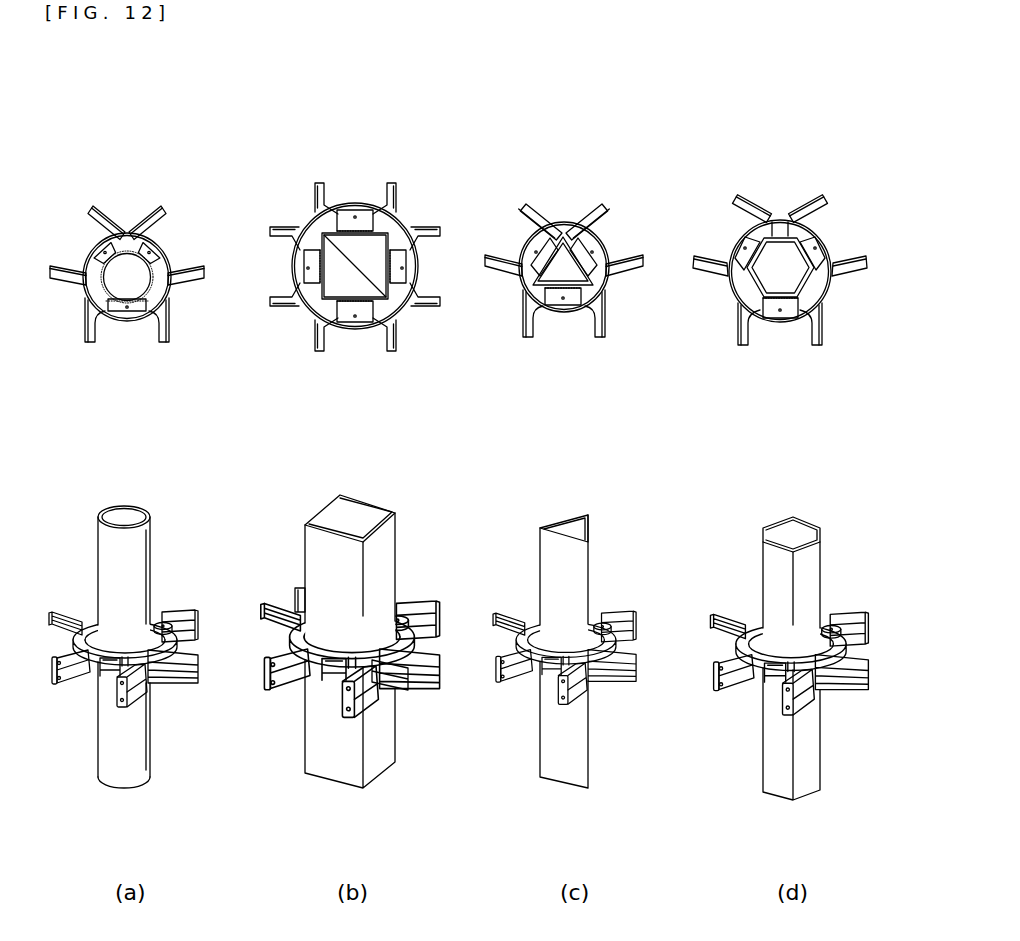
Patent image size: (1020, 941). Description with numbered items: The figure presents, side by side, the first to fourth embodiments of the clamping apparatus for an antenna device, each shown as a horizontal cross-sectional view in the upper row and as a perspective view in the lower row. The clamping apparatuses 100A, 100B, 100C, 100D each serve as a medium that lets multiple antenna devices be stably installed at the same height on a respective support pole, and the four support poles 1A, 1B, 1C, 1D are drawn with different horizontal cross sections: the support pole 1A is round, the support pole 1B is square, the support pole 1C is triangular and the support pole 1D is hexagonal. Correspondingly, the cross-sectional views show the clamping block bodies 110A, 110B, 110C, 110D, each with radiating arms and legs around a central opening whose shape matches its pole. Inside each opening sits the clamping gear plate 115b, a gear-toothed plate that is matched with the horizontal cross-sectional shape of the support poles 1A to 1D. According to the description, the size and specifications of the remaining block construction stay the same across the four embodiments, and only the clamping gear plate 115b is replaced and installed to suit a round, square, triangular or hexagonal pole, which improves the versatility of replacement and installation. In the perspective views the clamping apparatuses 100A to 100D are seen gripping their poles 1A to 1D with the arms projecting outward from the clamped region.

The clamping block body 110A is at (180, 188).
The clamping block body 110B is at (400, 170).
The clamping block body 110C is at (601, 170).
The clamping block body 110D is at (809, 179).
The clamping gear plate 115b is at (113, 240).
The support pole 1A is at (140, 512).
The support pole 1B is at (365, 507).
The support pole 1C is at (578, 515).
The support pole 1D is at (806, 524).
The clamping apparatus for an antenna device 100A is at (177, 592).
The clamping apparatus for an antenna device 100B is at (280, 705).
The clamping apparatus for an antenna device 100C is at (513, 706).
The clamping apparatus for an antenna device 100D is at (731, 715).